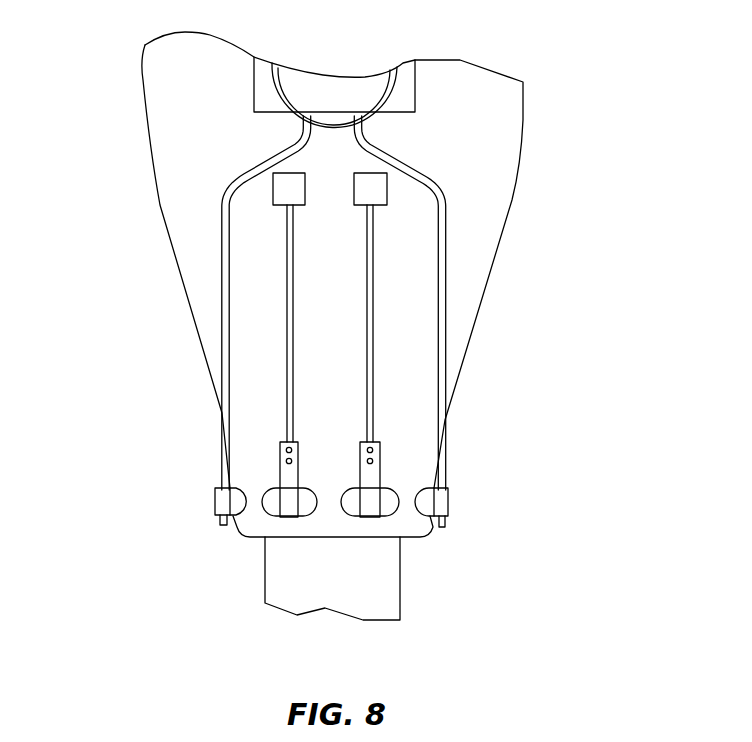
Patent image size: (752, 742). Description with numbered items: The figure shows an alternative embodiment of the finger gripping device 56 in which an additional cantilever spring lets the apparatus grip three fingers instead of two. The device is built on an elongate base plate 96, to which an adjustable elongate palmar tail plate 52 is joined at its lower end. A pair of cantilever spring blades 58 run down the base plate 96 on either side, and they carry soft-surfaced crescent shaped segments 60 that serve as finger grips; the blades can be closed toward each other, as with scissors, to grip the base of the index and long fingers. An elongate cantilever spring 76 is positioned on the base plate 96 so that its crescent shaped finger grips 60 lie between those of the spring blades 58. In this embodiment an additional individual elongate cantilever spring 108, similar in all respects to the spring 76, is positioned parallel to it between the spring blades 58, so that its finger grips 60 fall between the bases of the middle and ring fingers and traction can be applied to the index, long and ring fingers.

The adjustable elongate palmar tail plate 52 is at (400, 588).
The finger gripping device 56 is at (132, 366).
The cantilever spring blades 58 is at (220, 255).
The soft-surfaced crescent shaped segments 60 is at (217, 500).
The elongate cantilever spring 76 is at (287, 381).
The elongate base plate 96 is at (522, 133).
The additional individual elongate cantilever spring 108 is at (375, 383).